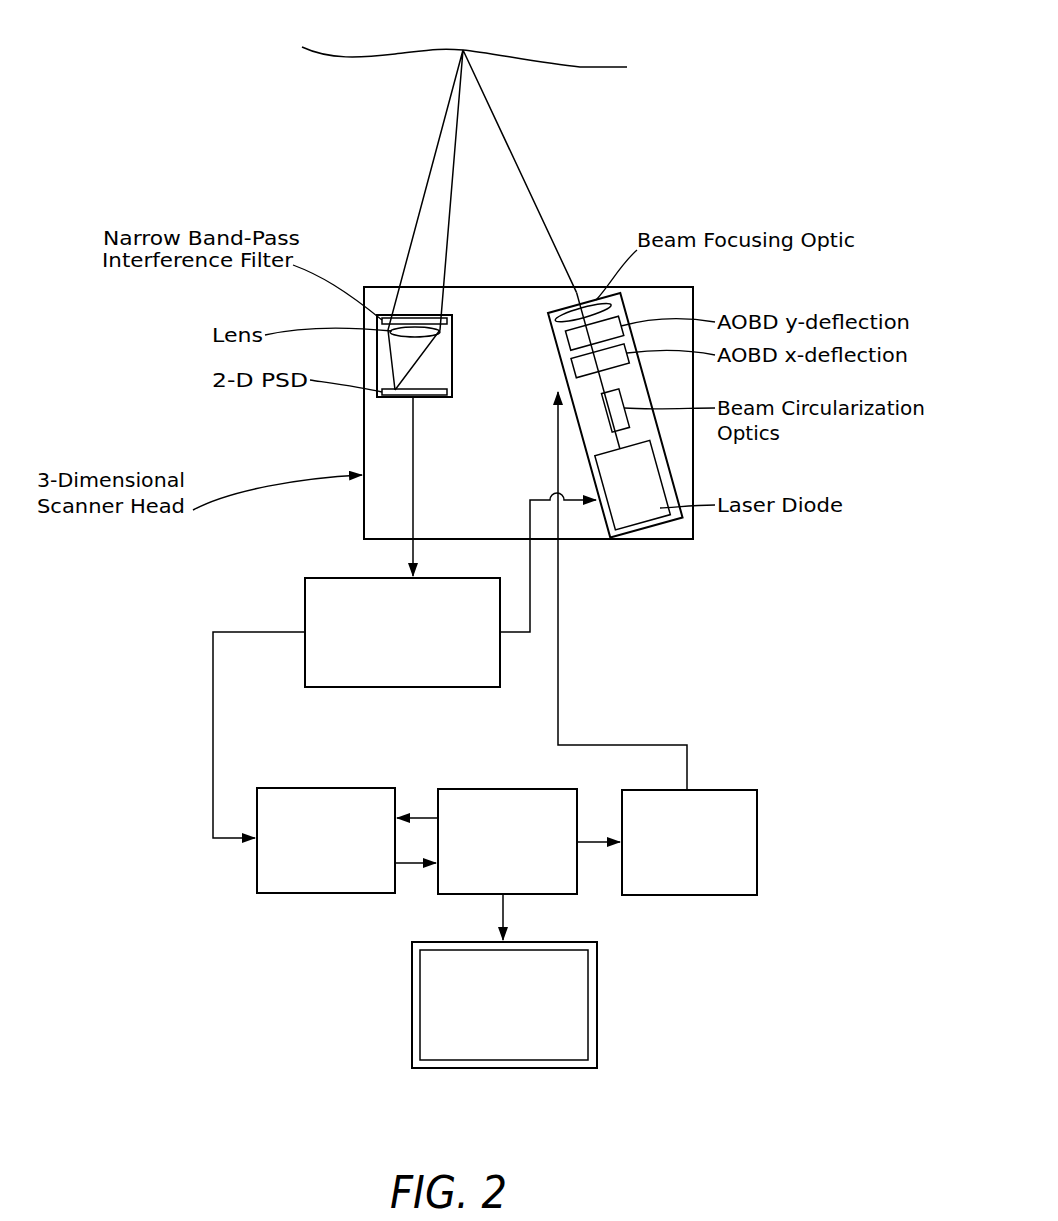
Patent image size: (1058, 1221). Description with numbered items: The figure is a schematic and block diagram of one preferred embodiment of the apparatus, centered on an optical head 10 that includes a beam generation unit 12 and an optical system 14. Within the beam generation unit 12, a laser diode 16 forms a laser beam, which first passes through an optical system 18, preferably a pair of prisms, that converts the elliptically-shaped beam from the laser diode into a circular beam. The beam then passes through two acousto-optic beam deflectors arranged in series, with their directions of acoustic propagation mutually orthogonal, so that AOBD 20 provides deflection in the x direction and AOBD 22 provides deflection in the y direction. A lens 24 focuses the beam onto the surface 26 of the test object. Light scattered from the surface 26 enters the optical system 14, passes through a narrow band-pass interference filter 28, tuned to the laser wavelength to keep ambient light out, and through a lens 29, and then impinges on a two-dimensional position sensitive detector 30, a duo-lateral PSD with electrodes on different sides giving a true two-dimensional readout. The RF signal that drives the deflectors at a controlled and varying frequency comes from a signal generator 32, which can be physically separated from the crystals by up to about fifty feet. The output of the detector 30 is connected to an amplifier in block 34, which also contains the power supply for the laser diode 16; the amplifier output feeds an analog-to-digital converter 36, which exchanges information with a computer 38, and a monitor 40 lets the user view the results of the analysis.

The optical head 10 is at (610, 548).
The beam generation unit 12 is at (670, 463).
The optical system 14 is at (374, 357).
The laser diode 16 is at (680, 518).
The optical system 18 is at (622, 407).
The AOBD 20 is at (580, 363).
The AOBD 22 is at (572, 342).
The lens 24 is at (563, 313).
The surface 26 is at (498, 50).
The narrow band-pass interference filter 28 is at (441, 319).
The lens 29 is at (432, 334).
The two-dimensional position sensitive detector 30 is at (435, 395).
The signal generator 32 is at (728, 795).
The amplifier 34 is at (347, 587).
The analog-to-digital converter 36 is at (320, 795).
The computer 38 is at (500, 798).
The monitor 40 is at (577, 1018).